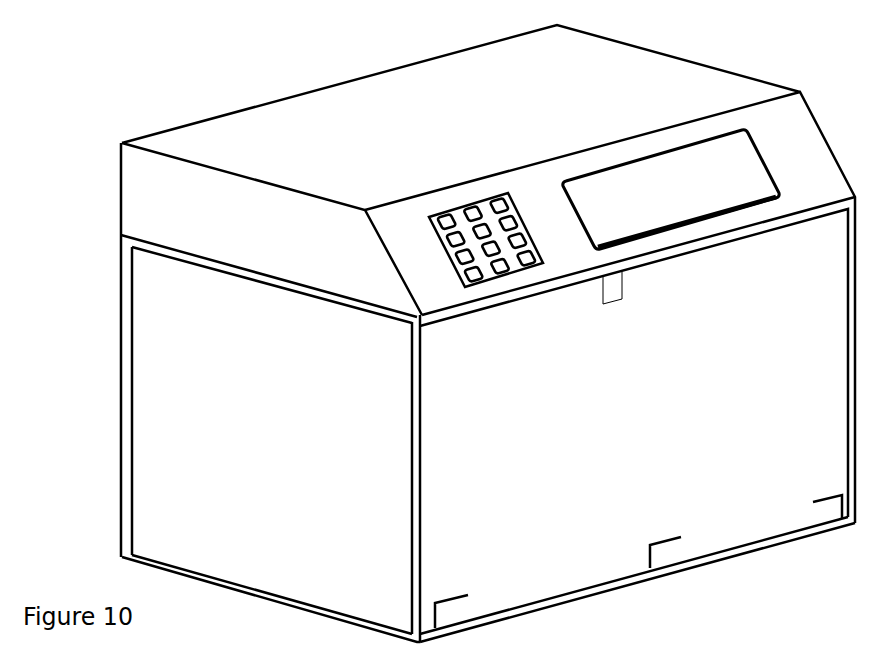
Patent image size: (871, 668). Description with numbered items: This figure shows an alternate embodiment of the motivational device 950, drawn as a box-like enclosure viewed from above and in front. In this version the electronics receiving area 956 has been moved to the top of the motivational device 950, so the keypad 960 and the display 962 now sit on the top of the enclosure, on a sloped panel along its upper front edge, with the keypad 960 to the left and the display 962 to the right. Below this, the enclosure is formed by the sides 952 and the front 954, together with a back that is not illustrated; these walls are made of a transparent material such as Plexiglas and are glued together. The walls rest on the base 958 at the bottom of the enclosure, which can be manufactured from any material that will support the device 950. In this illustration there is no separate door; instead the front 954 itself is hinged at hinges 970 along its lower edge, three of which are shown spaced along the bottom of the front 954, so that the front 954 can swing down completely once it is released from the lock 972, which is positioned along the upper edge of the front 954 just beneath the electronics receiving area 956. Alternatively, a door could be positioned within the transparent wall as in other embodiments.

The motivational device 950 is at (56, 121).
The sides 952 is at (269, 395).
The front 954 is at (637, 511).
The electronics receiving area 956 is at (461, 84).
The base 958 is at (748, 527).
The keypad 960 is at (537, 265).
The display 962 is at (672, 220).
The hinges 970 is at (465, 603).
The lock 972 is at (605, 305).